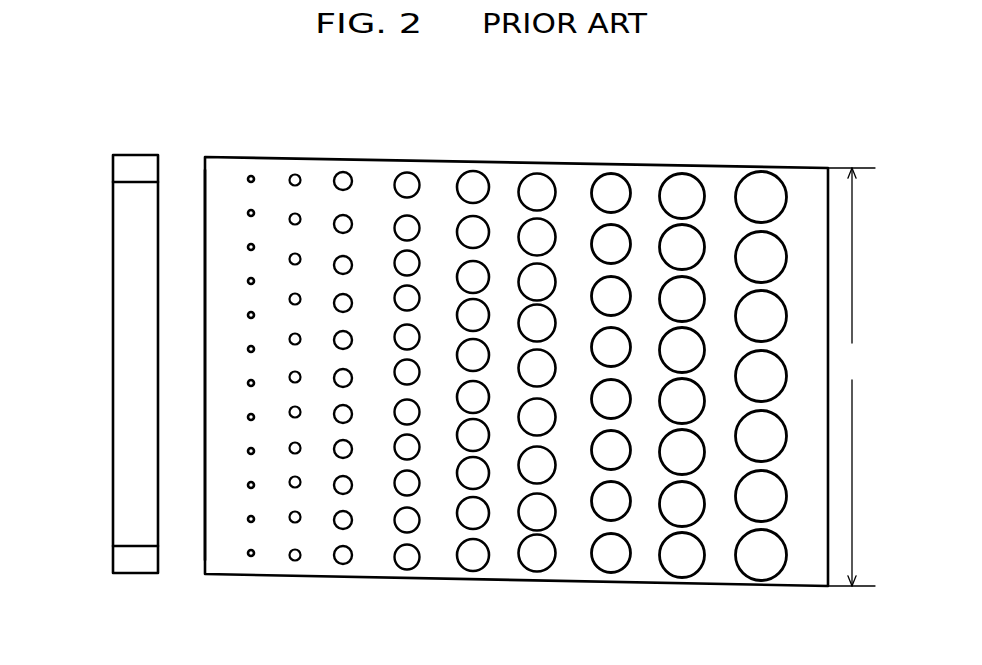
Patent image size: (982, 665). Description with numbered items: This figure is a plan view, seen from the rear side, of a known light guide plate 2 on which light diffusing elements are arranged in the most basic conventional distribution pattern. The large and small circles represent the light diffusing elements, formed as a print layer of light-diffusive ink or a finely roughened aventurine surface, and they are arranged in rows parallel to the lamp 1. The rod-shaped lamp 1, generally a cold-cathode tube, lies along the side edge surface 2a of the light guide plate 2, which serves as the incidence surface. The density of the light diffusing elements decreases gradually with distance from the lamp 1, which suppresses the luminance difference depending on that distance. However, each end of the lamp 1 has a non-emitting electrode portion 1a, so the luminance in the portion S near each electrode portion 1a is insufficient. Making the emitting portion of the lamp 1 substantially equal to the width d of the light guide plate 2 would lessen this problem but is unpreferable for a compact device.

The light source element 1 is at (125, 348).
The electrode portion 1a is at (125, 170).
The light guide plate 2 is at (615, 148).
The side edge surface 2a is at (205, 543).
The portion near the electrode portion S is at (260, 143).
The width of the light guide plate d is at (851, 377).